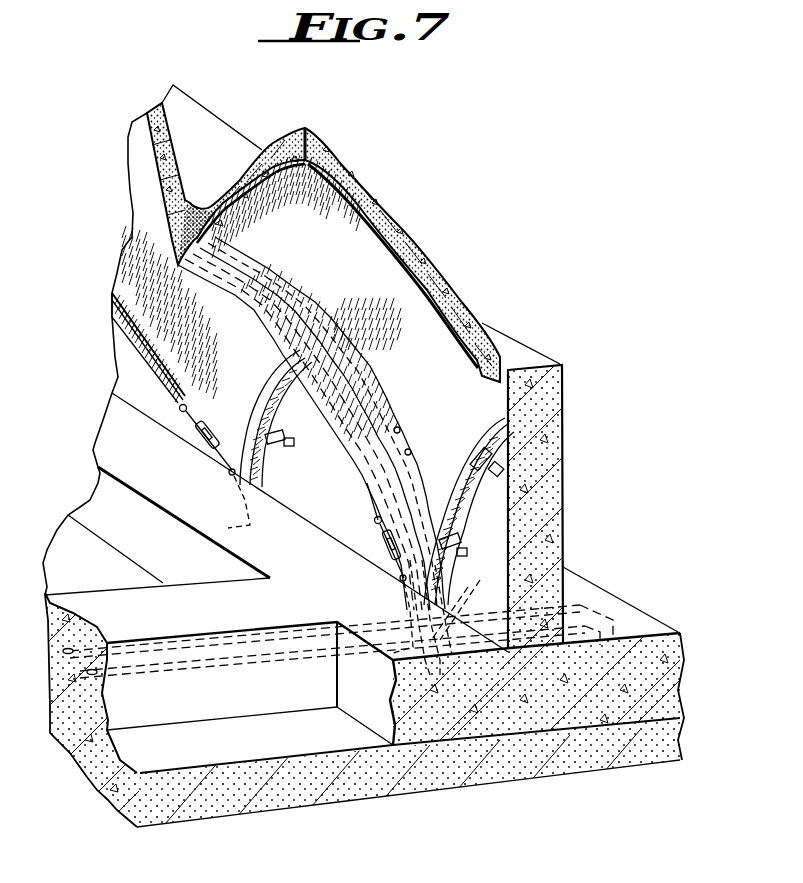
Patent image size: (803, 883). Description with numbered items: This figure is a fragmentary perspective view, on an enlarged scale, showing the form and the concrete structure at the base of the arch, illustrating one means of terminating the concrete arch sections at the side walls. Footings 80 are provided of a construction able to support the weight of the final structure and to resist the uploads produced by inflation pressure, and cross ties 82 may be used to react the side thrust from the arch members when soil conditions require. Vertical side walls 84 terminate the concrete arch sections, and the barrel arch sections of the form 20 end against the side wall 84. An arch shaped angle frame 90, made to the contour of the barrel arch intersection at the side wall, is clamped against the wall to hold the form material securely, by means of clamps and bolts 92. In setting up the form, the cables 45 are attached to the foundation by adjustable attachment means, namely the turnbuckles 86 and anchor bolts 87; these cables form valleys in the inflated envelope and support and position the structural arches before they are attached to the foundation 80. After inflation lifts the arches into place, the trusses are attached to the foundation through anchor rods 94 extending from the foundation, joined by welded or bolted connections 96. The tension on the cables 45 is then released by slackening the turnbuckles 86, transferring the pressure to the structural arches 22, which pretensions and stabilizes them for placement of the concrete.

The form 20 is at (393, 258).
The structural arches 22 is at (282, 282).
The cables 45 is at (175, 395).
The footings 80 is at (625, 614).
The cross ties 82 is at (93, 597).
The vertical side walls 84 is at (563, 408).
The turnbuckles 86 is at (202, 434).
The anchor bolts 87 is at (244, 500).
The arch shaped angle frame 90 is at (264, 382).
The clamps and bolts 92 is at (290, 441).
The anchor rods 94 is at (455, 616).
The welded or bolted connections 96 is at (409, 449).